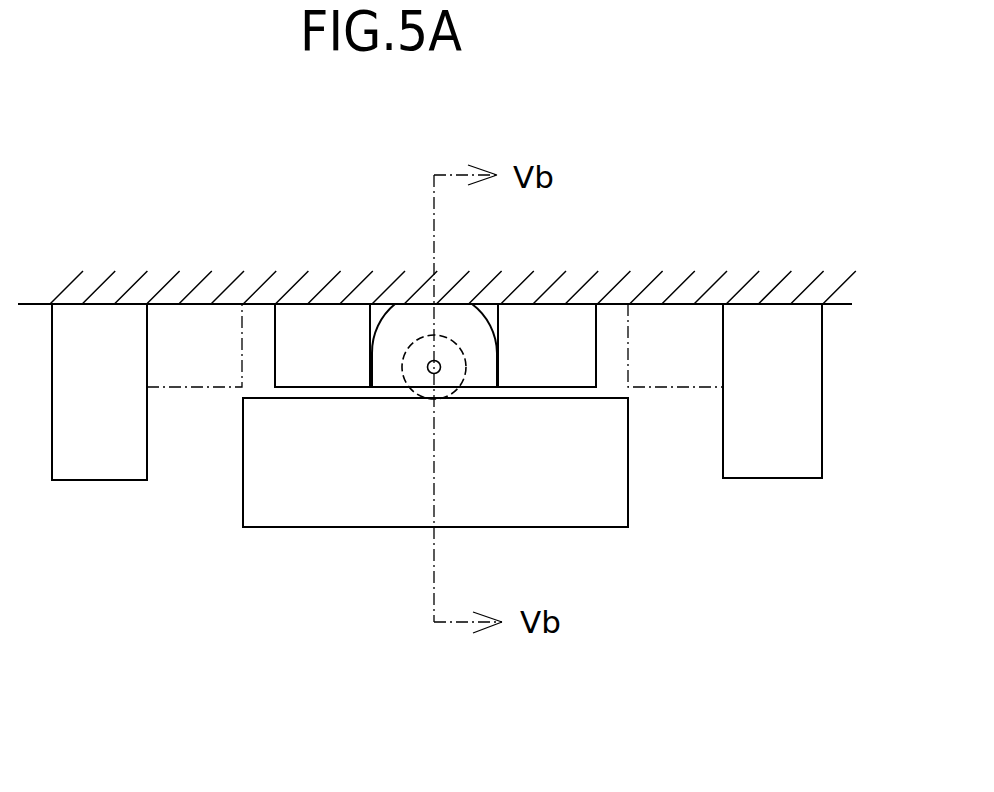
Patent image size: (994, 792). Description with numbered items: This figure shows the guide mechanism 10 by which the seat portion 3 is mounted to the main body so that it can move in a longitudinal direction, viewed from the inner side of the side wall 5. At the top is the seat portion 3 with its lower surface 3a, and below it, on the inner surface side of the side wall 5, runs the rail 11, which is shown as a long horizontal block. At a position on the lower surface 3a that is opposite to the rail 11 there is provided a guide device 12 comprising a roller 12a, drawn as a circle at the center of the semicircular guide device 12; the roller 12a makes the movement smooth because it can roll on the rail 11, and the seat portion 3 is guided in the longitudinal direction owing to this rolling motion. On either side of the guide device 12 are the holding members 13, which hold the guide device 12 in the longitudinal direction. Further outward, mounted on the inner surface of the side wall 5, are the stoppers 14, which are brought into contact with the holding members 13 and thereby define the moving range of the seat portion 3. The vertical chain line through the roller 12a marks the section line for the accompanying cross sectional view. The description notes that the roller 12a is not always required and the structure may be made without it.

The seat portion 3 is at (220, 285).
The lower surface 3a is at (694, 303).
The side wall 5 is at (326, 598).
The guide mechanism 10 is at (192, 524).
The rail 11 is at (542, 493).
The guide device 12 is at (397, 327).
The roller 12a is at (405, 400).
The holding members 13 is at (310, 338).
The stoppers 14 is at (95, 458).